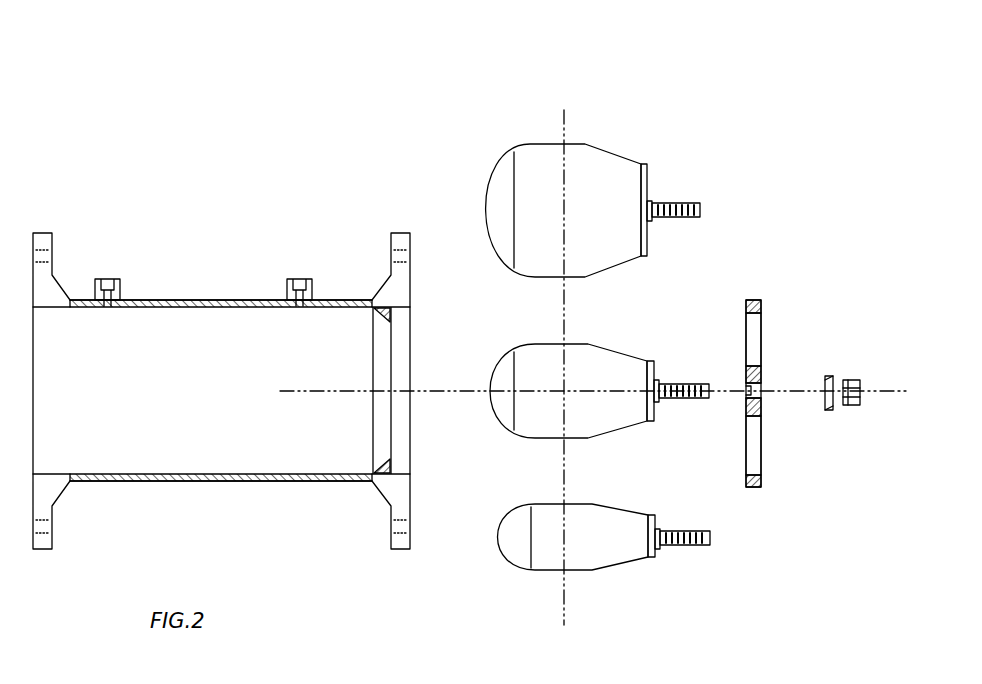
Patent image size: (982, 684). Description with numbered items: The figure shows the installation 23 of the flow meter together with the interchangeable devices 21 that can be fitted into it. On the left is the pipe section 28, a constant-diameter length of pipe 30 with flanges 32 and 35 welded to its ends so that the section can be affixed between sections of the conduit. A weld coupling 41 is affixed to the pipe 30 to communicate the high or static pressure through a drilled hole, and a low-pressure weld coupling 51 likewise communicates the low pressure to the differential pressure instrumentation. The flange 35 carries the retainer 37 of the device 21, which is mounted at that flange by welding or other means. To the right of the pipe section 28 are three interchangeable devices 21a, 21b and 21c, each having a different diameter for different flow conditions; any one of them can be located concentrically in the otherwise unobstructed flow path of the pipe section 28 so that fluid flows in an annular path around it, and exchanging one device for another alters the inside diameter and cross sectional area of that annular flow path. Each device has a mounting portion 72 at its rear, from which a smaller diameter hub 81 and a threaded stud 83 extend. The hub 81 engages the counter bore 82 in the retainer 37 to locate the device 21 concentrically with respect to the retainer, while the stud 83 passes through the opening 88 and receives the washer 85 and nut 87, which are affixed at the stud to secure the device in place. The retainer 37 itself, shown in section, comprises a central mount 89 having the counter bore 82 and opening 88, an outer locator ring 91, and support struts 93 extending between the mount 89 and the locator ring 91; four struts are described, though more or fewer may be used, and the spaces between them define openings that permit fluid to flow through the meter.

The device 21 is at (593, 125).
The device 21a is at (574, 425).
The device 21b is at (579, 260).
The device 21c is at (582, 560).
The installation 23 is at (276, 190).
The pipe section 28 is at (218, 300).
The pipe 30 is at (228, 481).
The flange 32 is at (43, 233).
The flange 35 is at (400, 233).
The retainer 37 is at (761, 487).
The weld coupling 41 is at (113, 279).
The low-pressure weld coupling 51 is at (305, 279).
The mounting portion 72 is at (647, 240).
The hub 81 is at (650, 201).
The counter bore 82 is at (748, 372).
The threaded stud 83 is at (700, 210).
The washer 85 is at (829, 376).
The nut 87 is at (858, 380).
The opening 88 is at (754, 384).
The central mount 89 is at (761, 410).
The outer locator ring 91 is at (756, 300).
The support struts 93 is at (757, 322).